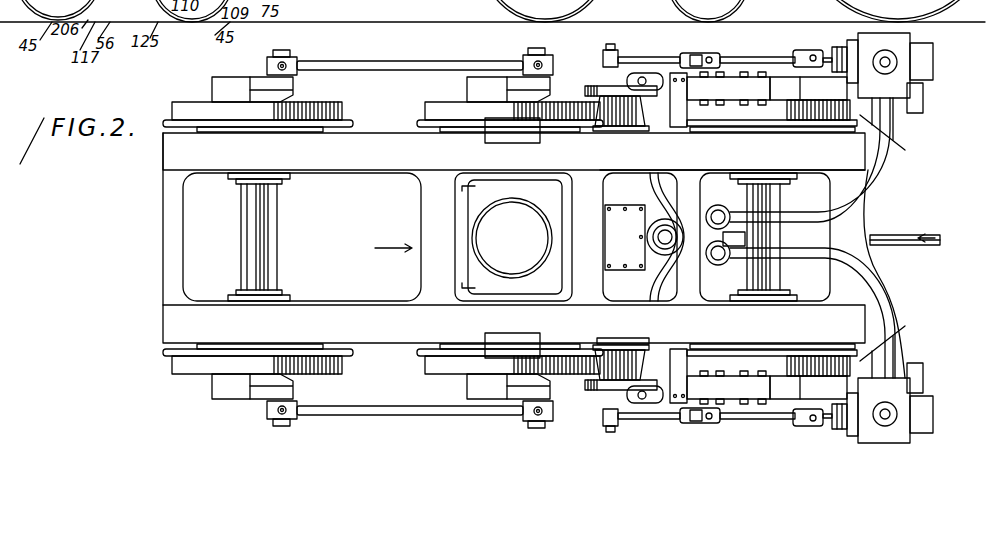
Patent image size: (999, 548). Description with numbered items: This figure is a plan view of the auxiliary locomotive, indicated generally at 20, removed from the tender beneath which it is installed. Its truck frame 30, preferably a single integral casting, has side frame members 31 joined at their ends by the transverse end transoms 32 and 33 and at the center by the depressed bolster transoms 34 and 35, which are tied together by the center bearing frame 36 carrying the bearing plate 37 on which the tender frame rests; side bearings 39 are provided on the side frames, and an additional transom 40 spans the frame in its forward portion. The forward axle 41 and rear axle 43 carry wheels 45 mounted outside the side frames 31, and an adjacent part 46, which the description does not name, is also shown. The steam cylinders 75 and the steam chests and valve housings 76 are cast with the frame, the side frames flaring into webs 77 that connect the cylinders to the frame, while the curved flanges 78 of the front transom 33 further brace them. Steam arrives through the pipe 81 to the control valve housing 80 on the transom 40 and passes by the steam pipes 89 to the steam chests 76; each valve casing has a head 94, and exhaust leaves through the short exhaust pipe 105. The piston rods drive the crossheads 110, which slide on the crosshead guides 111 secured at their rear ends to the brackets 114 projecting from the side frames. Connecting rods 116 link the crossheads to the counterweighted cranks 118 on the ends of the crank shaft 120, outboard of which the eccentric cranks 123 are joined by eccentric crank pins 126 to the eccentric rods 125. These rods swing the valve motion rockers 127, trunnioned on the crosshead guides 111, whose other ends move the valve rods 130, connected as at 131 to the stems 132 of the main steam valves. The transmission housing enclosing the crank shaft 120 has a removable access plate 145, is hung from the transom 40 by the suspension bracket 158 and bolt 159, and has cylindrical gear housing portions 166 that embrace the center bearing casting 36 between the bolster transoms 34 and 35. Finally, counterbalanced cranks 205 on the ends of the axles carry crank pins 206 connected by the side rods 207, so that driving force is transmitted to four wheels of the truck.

The truck 20 is at (379, 244).
The truck frame 30 is at (163, 160).
The side frame members 31 is at (355, 147).
The transverse end beam or transom 32 is at (165, 213).
The front transom member 33 is at (873, 210).
The bolster transom 34 is at (423, 211).
The bolster transom 35 is at (593, 173).
The center bearing frame 36 is at (558, 232).
The bearing plate 37 is at (543, 257).
The side bearings 39 is at (512, 140).
The additional transom 40 is at (697, 170).
The forward axle 41 is at (780, 196).
The rear axle 43 is at (262, 218).
The wheels 45 is at (186, 108).
The spring 46 is at (820, 120).
The steam engine cylinders 75 is at (925, 97).
The steam chests and distributing valve housings 76 is at (912, 36).
The webs 77 is at (866, 124).
The curved flanges 78 is at (912, 132).
The control valve housing 80 is at (712, 245).
The pipe 81 is at (882, 245).
The steam pipes 89 is at (830, 228).
The head 94 is at (933, 60).
The short exhaust pipe 105 is at (886, 70).
The crossheads 110 is at (760, 82).
The crosshead guides 111 is at (808, 88).
The brackets 114 is at (690, 105).
The connecting rods 116 is at (660, 80).
The counterweighted cranks 118 is at (586, 92).
The crank shaft 120 is at (622, 340).
The eccentric cranks 123 is at (627, 82).
The eccentric rods 125 is at (637, 58).
The eccentric crank pins 126 is at (610, 52).
The valve motion rockers 127 is at (690, 58).
The valve rods 130 is at (735, 58).
The connection 131 is at (805, 55).
The stems 132 is at (836, 52).
The removable plate 145 is at (612, 222).
The suspension bracket 158 is at (700, 213).
The bolt 159 is at (663, 238).
The cylindrical enlarged portions 166 is at (462, 186).
The counterbalanced cranks 205 is at (243, 82).
The crank pins 206 is at (553, 66).
The side rods 207 is at (365, 66).